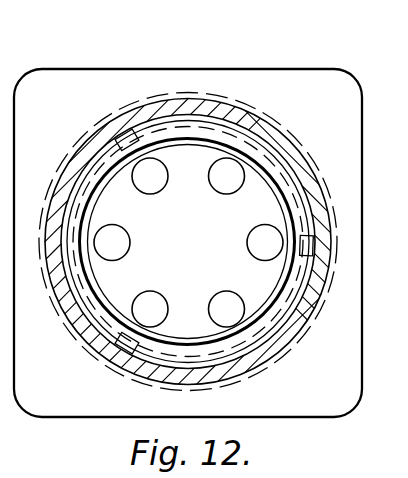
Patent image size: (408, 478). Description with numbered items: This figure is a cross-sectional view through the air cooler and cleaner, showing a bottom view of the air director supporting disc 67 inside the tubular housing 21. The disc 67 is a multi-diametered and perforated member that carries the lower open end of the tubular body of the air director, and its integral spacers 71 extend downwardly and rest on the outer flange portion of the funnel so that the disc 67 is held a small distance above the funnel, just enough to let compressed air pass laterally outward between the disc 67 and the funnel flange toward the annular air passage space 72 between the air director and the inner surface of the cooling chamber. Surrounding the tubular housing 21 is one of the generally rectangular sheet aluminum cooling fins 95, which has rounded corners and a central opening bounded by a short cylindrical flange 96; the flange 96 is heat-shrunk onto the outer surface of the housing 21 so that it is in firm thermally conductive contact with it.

The cooling fins 95 is at (68, 78).
The cylindrical flanges 96 is at (285, 352).
The tubular housing 21 is at (301, 163).
The annular air passage space 72 is at (306, 288).
The director supporting disc 67 is at (120, 283).
The spacers 71 is at (120, 130).